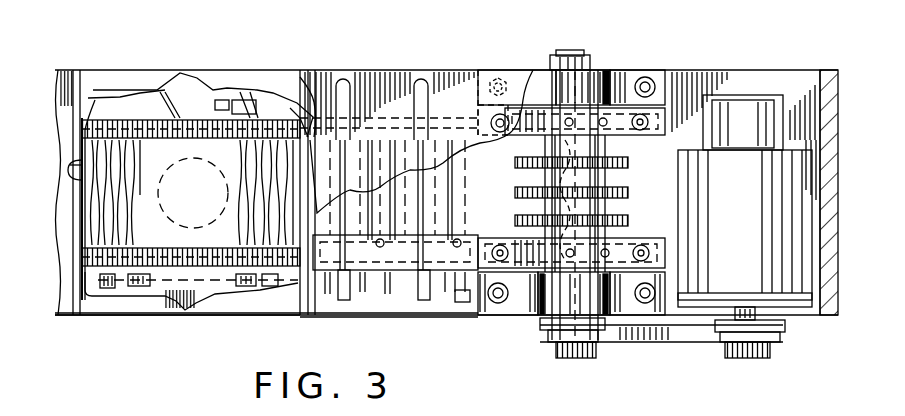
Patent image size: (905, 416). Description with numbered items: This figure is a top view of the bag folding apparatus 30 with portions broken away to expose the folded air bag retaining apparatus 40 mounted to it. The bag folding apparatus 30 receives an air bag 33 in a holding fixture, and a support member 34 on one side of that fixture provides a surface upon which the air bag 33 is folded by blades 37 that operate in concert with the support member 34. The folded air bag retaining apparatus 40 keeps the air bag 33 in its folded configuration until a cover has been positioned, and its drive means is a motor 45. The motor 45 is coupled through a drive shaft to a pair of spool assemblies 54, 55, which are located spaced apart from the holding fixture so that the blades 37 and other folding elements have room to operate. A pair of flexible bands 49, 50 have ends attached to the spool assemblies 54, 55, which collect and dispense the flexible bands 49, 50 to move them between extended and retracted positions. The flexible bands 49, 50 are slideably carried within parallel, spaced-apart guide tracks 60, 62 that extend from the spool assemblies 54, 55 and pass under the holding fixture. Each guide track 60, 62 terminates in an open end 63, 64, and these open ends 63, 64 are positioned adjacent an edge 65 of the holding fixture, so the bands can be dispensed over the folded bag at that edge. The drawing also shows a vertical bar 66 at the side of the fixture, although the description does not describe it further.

The bag folding apparatus 30 is at (500, 60).
The air bag 33 is at (197, 285).
The support member 34 is at (65, 75).
The blades 37 is at (337, 299).
The folded air bag retaining apparatus 40 is at (465, 294).
The motor 45 is at (760, 217).
The flexible band 49 is at (162, 226).
The flexible band 50 is at (225, 127).
The spool assembly 54 is at (615, 242).
The spool assembly 55 is at (646, 136).
The guide track 60 is at (400, 279).
The guide track 62 is at (393, 104).
The open end 63 is at (60, 315).
The open end 64 is at (86, 75).
The edge 65 is at (116, 118).
The vertical bar 66 is at (305, 100).